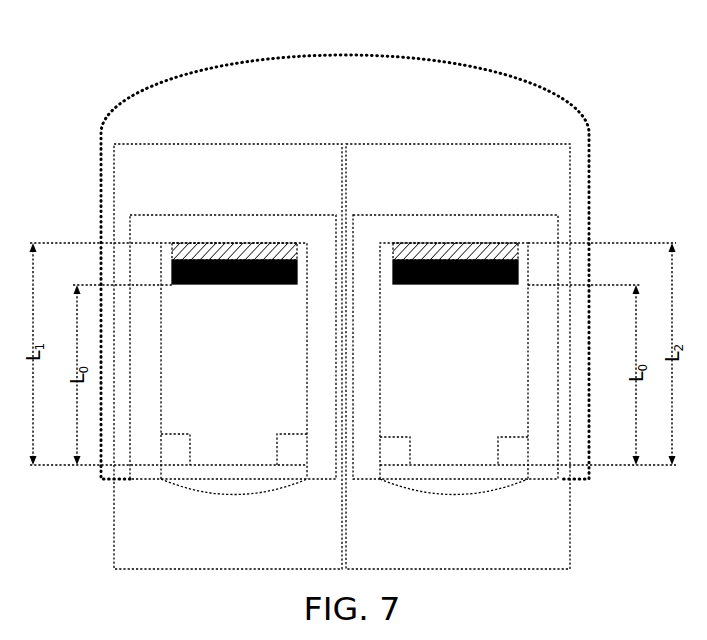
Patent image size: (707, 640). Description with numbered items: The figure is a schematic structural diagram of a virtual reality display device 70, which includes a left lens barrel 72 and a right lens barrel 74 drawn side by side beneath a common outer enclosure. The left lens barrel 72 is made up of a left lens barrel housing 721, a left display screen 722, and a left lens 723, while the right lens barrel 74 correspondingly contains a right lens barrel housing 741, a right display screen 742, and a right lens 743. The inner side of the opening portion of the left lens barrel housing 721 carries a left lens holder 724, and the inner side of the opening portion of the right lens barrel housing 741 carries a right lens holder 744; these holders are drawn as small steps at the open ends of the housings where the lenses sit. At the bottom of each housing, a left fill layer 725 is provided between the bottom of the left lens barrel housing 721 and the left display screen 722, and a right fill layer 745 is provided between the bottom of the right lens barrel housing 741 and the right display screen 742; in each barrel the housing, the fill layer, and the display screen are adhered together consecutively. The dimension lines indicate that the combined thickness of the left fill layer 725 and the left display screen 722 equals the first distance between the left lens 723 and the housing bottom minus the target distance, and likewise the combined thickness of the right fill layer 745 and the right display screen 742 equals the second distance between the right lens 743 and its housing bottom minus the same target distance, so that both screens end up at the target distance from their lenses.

The virtual reality display device 70 is at (489, 72).
The left lens barrel 72 is at (305, 559).
The left lens barrel housing 721 is at (255, 240).
The left display screen 722 is at (255, 285).
The left lens 723 is at (233, 483).
The left lens holder 724 is at (167, 434).
The left fill layer 725 is at (173, 243).
The right lens barrel 74 is at (537, 559).
The right lens barrel housing 741 is at (475, 240).
The right display screen 742 is at (476, 285).
The right lens 743 is at (453, 483).
The right lens holder 744 is at (386, 440).
The right fill layer 745 is at (397, 243).